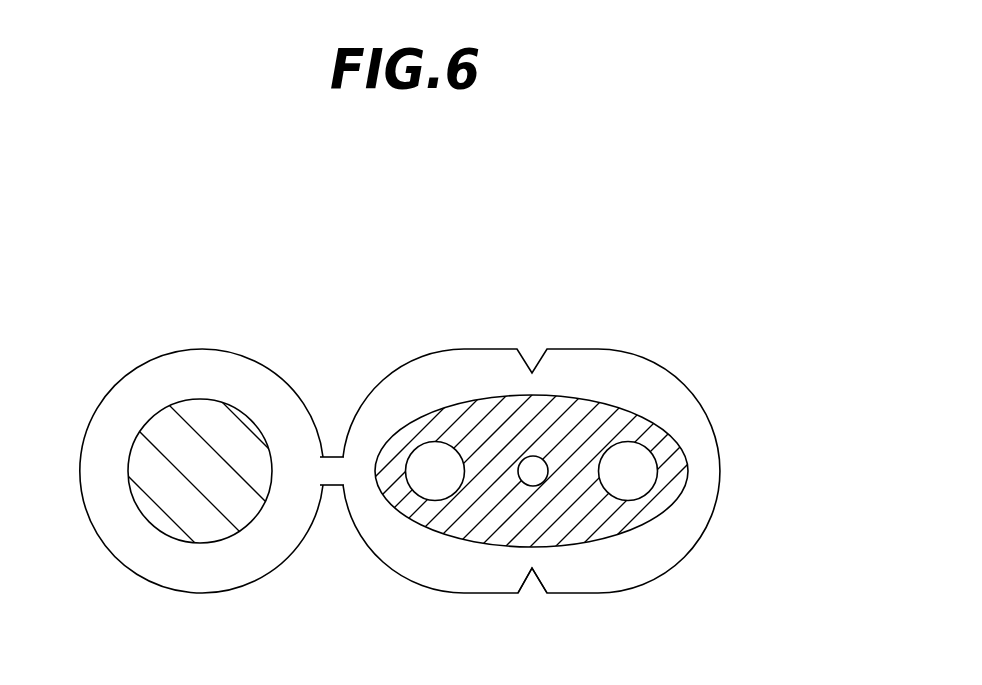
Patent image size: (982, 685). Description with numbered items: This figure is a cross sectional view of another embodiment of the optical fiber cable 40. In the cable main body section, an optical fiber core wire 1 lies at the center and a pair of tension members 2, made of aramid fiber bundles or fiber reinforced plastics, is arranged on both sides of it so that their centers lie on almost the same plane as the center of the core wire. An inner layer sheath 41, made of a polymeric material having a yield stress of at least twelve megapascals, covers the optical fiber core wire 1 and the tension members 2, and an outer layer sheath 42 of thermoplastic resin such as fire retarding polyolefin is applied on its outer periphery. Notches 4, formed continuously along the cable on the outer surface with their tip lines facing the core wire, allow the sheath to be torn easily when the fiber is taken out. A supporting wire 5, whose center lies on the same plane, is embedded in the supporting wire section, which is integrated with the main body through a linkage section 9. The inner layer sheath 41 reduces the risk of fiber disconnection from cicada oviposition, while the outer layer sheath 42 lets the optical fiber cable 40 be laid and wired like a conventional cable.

The optical fiber cable 40 is at (703, 207).
The outer layer sheath 42 is at (500, 370).
The inner layer sheath 41 is at (421, 418).
The optical fiber core wire 1 is at (537, 480).
The tension member 2 is at (423, 498).
The notch 4 is at (537, 592).
The supporting wire 5 is at (185, 458).
The linkage section 9 is at (333, 477).